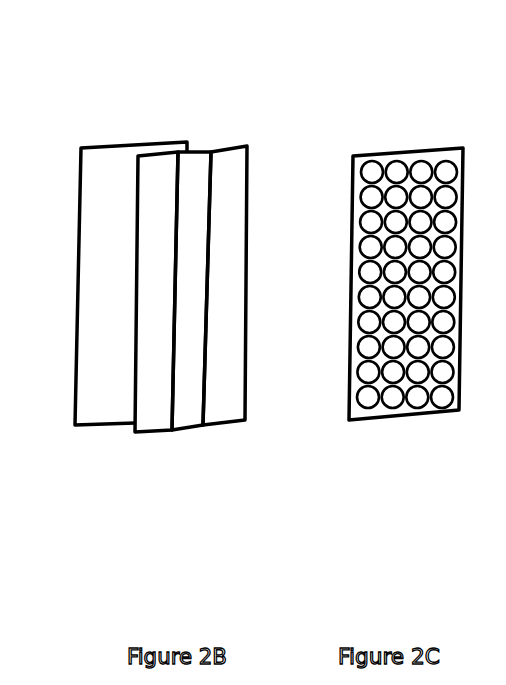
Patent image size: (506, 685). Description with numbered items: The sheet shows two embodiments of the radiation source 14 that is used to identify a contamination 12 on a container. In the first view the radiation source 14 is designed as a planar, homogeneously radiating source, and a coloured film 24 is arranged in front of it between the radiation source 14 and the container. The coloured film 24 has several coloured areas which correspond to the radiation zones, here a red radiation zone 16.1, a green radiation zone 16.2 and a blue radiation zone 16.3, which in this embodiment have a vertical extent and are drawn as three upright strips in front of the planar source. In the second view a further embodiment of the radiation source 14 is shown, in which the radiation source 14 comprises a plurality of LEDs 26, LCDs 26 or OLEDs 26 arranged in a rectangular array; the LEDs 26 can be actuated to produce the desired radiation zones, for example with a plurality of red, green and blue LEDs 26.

In FIG. 2B, the contamination 12 is at (106, 399).
In FIG. 2B, the radiation source 14 is at (208, 297).
In FIG. 2C, the radiation source 14 is at (368, 226).
In FIG. 2B, the red radiation zone 16.1 is at (145, 420).
In FIG. 2B, the green radiation zone 16.2 is at (185, 418).
In FIG. 2B, the blue radiation zone 16.3 is at (228, 413).
In FIG. 2B, the coloured film 24 is at (247, 272).
In FIG. 2C, the LEDs 26 is at (370, 350).